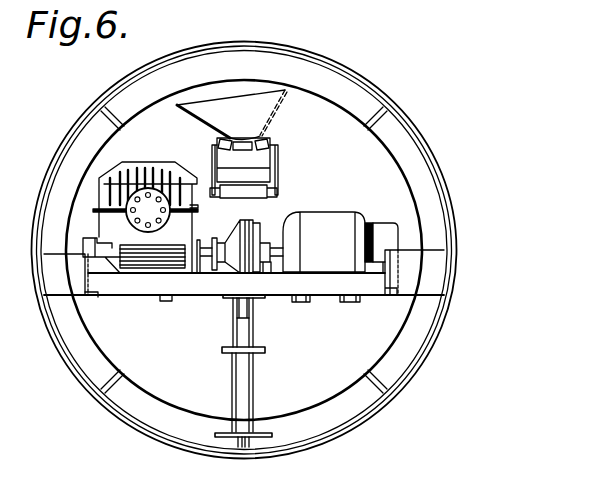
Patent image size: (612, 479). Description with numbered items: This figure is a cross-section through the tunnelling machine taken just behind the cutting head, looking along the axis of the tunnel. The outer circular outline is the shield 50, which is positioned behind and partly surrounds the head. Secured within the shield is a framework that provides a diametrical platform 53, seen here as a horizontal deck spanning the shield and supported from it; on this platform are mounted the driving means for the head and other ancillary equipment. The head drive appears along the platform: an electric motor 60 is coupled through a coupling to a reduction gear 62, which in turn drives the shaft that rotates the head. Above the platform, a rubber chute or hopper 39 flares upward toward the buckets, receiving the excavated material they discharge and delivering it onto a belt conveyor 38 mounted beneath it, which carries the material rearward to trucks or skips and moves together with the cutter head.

The shield 50 is at (365, 78).
The rubber chute or hopper 39 is at (198, 114).
The belt conveyor 38 is at (270, 135).
The reduction gear 62 is at (197, 238).
The electric motor 60 is at (262, 227).
The diametrical platform 53 is at (322, 270).